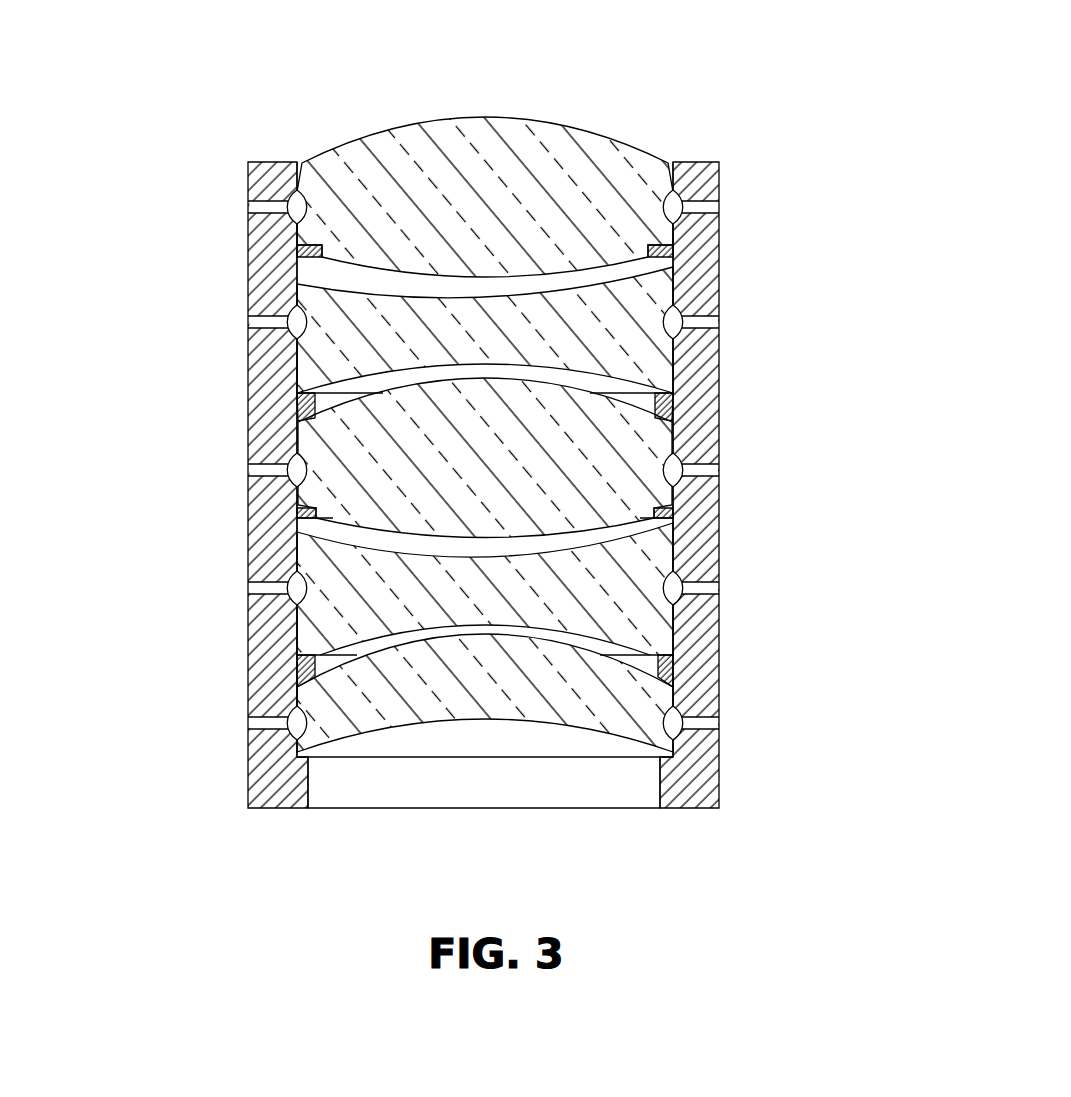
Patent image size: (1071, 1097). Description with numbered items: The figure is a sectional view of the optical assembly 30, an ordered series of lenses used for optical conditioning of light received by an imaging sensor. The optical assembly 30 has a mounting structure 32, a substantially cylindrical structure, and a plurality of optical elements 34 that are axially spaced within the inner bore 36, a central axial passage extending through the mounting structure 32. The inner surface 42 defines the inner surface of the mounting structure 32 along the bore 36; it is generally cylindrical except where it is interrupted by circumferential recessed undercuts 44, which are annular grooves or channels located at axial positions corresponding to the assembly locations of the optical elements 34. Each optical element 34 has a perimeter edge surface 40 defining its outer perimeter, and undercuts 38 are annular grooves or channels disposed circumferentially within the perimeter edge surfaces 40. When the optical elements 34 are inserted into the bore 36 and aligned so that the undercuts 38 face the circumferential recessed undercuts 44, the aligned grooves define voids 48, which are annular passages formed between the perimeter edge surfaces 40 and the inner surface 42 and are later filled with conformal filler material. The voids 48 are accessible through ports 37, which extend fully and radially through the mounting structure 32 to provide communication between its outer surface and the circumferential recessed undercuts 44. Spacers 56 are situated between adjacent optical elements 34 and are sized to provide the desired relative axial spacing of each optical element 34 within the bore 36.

The optical assembly 30 is at (479, 462).
The mounting structure 32 is at (700, 630).
The optical elements 34 is at (318, 297).
The inner bore 36 is at (652, 784).
The ports 37 is at (253, 208).
The undercuts 38 is at (300, 737).
The perimeter edge surface 40 is at (298, 170).
The inner surface 42 is at (670, 372).
The circumferential recessed undercuts 44 is at (287, 340).
The voids 48 is at (295, 467).
The spacers 56 is at (667, 412).